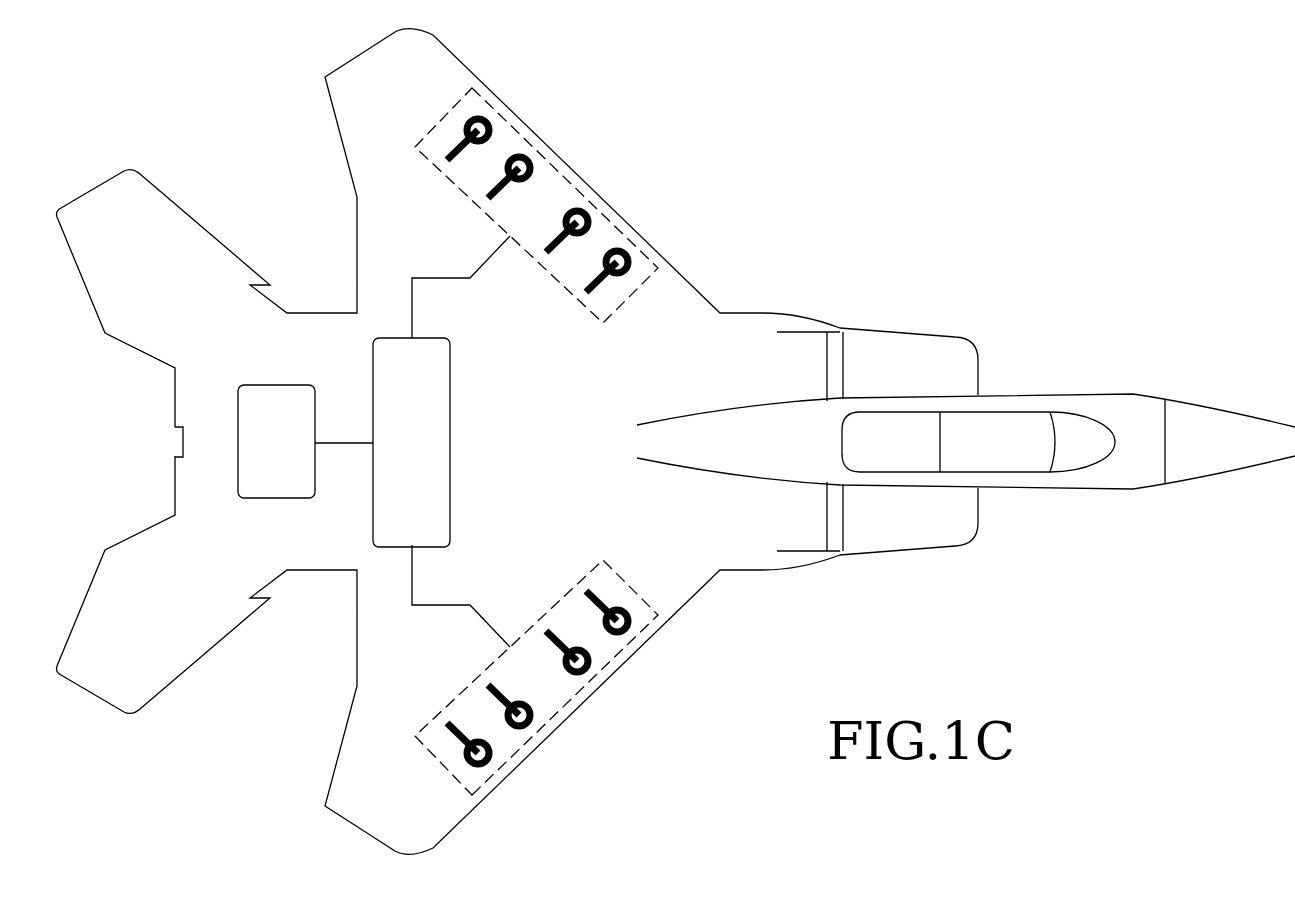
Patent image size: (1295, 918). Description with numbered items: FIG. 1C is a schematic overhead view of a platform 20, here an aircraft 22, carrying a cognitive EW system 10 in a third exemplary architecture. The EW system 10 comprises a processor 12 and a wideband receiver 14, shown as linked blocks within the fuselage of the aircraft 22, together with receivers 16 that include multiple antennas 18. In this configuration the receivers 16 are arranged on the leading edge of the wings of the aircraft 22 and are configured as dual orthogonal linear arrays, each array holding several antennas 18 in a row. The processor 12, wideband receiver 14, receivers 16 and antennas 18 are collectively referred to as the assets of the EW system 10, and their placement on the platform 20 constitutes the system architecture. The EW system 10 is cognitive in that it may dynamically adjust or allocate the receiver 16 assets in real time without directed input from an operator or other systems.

The EW system 10 is at (958, 132).
The processor 12 is at (395, 456).
The wideband receiver 14 is at (260, 456).
The receiver 16 is at (578, 157).
The antenna 18 is at (488, 117).
The platform 20 is at (917, 409).
The aircraft 22 is at (913, 316).